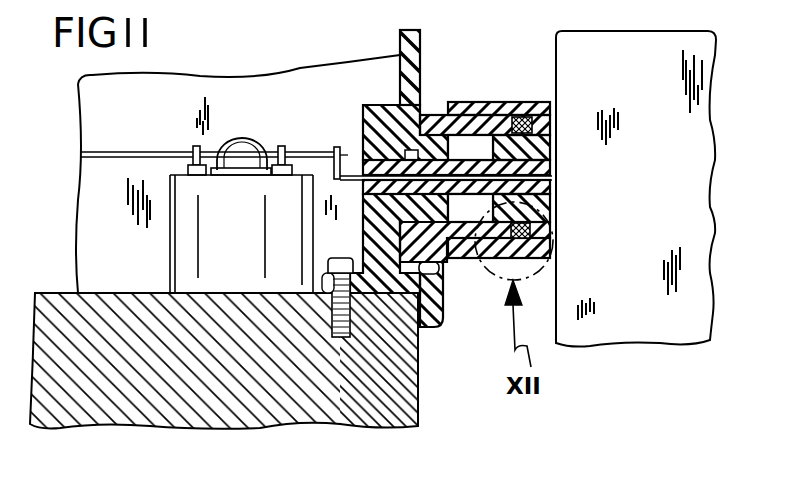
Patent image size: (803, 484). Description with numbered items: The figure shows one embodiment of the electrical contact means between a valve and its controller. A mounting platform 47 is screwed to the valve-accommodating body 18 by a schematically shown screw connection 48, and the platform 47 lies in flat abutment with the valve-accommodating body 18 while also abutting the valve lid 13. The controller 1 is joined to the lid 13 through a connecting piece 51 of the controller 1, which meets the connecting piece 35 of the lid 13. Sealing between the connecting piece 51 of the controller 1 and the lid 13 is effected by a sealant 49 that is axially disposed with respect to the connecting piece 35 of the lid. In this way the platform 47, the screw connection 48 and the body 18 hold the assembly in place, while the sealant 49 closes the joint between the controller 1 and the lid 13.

The controller 1 is at (658, 133).
The valve lid 13 is at (400, 50).
The valve-accommodating body 18 is at (53, 303).
The connecting piece of the lid 35 is at (473, 104).
The mounting platform 47 is at (417, 337).
The screw connection 48 is at (338, 337).
The sealant 49 is at (512, 103).
The connecting piece of the controller 51 is at (469, 260).